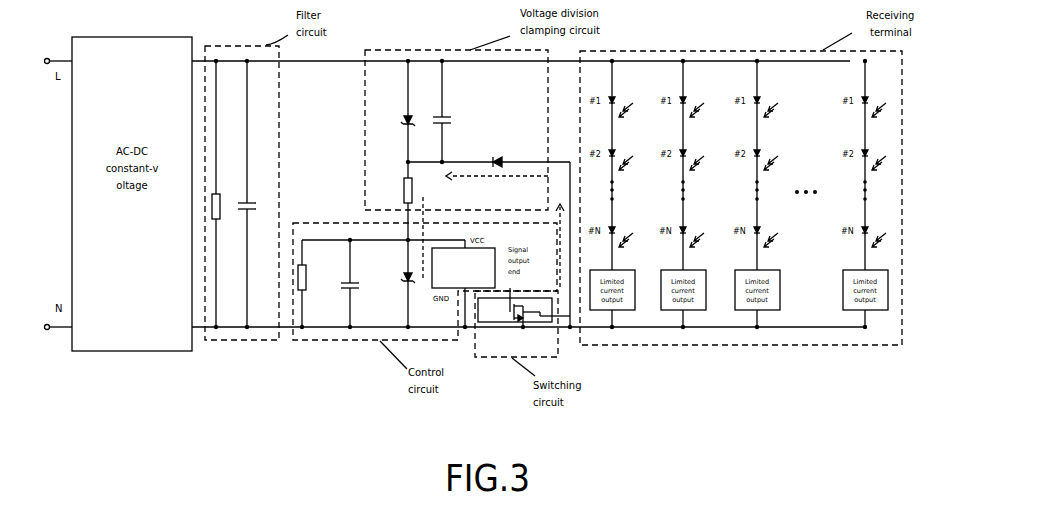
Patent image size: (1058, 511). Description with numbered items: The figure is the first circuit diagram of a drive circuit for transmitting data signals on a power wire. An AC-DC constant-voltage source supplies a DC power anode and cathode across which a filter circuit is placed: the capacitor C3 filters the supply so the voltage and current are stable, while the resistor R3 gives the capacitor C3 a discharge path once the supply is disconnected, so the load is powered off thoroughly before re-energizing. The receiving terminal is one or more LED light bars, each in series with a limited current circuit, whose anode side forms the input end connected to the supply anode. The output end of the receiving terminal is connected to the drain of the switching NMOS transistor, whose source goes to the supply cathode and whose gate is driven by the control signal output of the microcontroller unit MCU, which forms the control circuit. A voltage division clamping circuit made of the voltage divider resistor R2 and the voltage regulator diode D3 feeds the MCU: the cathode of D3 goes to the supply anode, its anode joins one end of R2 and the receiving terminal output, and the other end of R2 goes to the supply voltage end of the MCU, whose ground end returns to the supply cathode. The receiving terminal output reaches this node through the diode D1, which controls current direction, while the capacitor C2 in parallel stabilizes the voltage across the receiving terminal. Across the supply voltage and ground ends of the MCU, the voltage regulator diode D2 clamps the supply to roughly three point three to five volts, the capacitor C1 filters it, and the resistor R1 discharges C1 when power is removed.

The resistor R1 is at (309, 283).
The voltage divider resistor R2 is at (394, 201).
The resistor R3 is at (223, 194).
The capacitor C1 is at (340, 283).
The capacitor C2 is at (450, 111).
The capacitor C3 is at (254, 194).
The diode D1 is at (499, 155).
The voltage regulator diode D2 is at (396, 283).
The voltage regulator diode D3 is at (395, 111).
The microcontroller unit MCU is at (463, 268).
The NMOS transistor NMOS is at (524, 319).